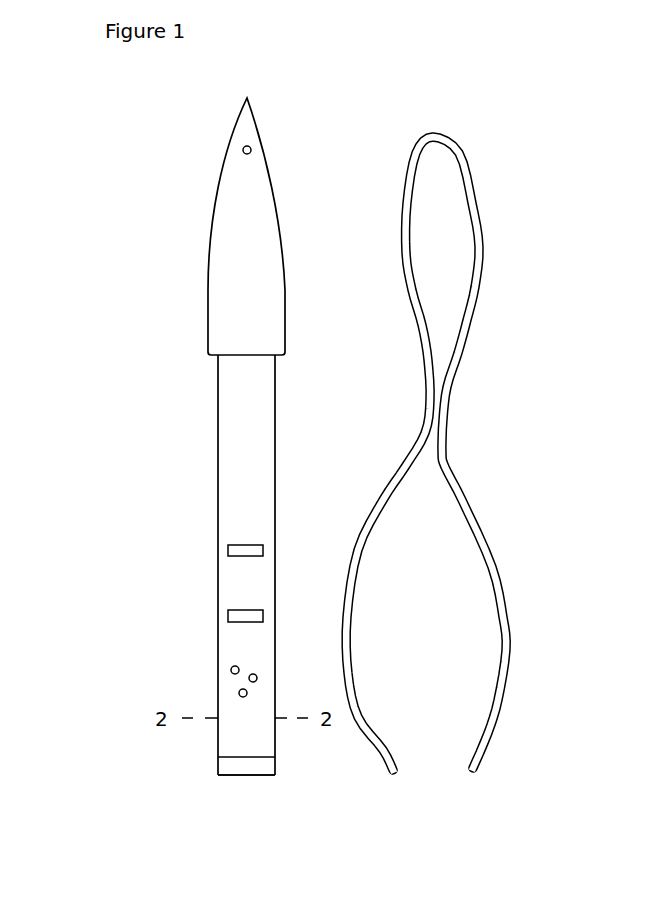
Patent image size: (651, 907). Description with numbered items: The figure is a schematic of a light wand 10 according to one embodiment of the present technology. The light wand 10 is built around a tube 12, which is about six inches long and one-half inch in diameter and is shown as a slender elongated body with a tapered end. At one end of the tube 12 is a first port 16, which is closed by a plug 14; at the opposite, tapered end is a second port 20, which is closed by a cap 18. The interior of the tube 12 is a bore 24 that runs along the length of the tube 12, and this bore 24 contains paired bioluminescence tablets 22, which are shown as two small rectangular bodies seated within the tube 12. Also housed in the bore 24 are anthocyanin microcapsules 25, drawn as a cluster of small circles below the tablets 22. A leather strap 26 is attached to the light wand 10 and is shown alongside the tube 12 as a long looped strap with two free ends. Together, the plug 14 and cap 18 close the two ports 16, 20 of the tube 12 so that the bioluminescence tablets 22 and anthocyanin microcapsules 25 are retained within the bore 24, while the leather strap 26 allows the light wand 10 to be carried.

The light wand 10 is at (85, 137).
The tube 12 is at (218, 428).
The plug 14 is at (245, 768).
The first port 16 is at (218, 768).
The cap 18 is at (255, 133).
The second port 20 is at (208, 338).
The paired bioluminescence tablets 22 is at (230, 616).
The bore 24 is at (243, 492).
The anthocyanin microcapsules 25 is at (237, 688).
The leather strap 26 is at (483, 248).